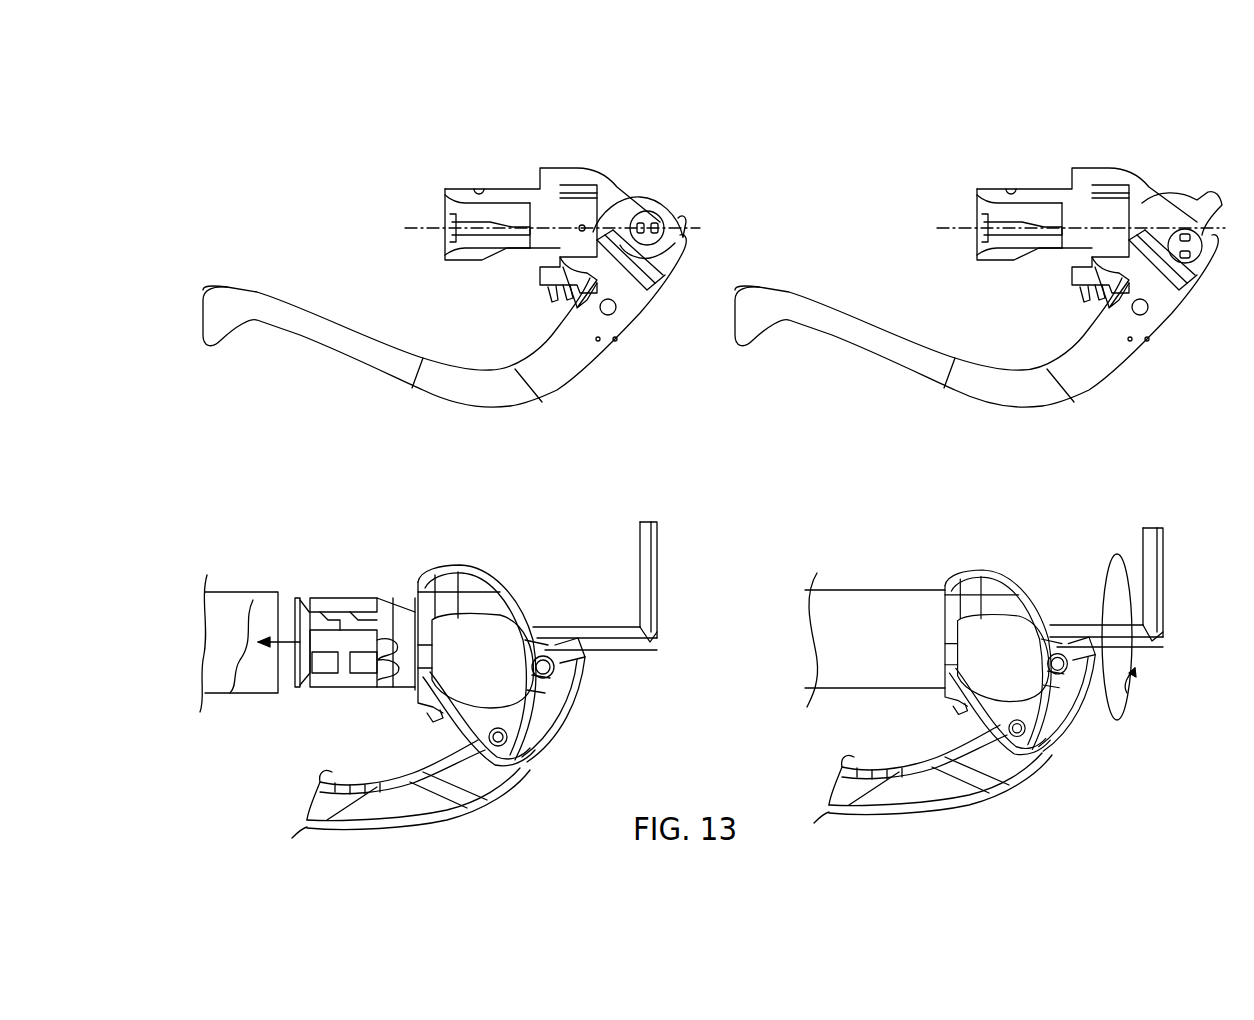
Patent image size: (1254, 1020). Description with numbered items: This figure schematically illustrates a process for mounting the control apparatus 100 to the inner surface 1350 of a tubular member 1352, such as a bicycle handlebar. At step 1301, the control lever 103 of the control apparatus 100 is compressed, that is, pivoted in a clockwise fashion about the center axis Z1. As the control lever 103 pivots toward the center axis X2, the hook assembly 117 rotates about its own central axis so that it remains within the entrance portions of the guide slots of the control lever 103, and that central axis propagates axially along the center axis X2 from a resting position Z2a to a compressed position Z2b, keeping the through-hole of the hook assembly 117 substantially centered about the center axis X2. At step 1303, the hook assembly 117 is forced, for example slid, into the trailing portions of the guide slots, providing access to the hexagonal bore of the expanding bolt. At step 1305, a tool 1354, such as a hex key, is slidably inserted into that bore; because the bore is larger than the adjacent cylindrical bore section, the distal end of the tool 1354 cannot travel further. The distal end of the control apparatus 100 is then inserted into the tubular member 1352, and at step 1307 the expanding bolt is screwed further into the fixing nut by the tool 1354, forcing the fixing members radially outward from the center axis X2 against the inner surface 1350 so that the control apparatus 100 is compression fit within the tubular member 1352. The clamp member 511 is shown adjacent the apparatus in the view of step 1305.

The control apparatus 100 is at (557, 142).
The control lever 103 is at (330, 323).
The hook assembly 117 is at (648, 210).
The clamp member 511 is at (417, 692).
The step 1301 is at (414, 184).
The step 1303 is at (990, 166).
The step 1305 is at (394, 554).
The step 1307 is at (975, 554).
The inner surface 1350 is at (256, 641).
The tubular member 1352 is at (212, 590).
The tool 1354 is at (640, 650).
The center axis Z1 is at (616, 308).
The resting position Z2a is at (583, 224).
The compressed position Z2b is at (656, 232).
The center axis X2 is at (540, 238).